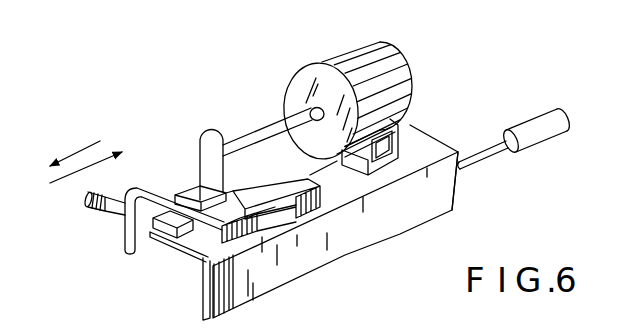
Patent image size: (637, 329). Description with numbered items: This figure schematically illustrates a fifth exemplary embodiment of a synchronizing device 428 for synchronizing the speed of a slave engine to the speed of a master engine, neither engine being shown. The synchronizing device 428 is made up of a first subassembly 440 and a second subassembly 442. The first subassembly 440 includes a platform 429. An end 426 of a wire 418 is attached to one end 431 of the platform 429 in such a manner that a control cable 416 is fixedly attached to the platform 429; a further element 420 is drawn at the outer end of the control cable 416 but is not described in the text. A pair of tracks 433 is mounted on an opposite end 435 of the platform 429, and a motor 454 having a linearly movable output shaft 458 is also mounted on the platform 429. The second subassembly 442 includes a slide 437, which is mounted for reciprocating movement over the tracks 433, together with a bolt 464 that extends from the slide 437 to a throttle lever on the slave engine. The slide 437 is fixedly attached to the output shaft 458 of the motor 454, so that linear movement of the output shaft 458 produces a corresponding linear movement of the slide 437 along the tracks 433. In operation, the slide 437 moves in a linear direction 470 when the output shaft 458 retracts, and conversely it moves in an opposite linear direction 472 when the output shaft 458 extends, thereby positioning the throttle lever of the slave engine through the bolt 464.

The control cable 416 is at (536, 151).
The wire 418 is at (478, 168).
The knob 420 is at (538, 124).
The end of wire 426 is at (460, 157).
The synchronizing device 428 is at (426, 79).
The platform 429 is at (253, 284).
The end of platform 431 is at (460, 197).
The tracks 433 is at (283, 193).
The opposite end of platform 435 is at (202, 281).
The slide 437 is at (237, 240).
The first subassembly 440 is at (375, 247).
The second subassembly 442 is at (183, 164).
The motor 454 is at (388, 67).
The output shaft 458 is at (311, 109).
The bolt 464 is at (106, 211).
The linear direction 470 is at (94, 160).
The opposite linear direction 472 is at (89, 146).